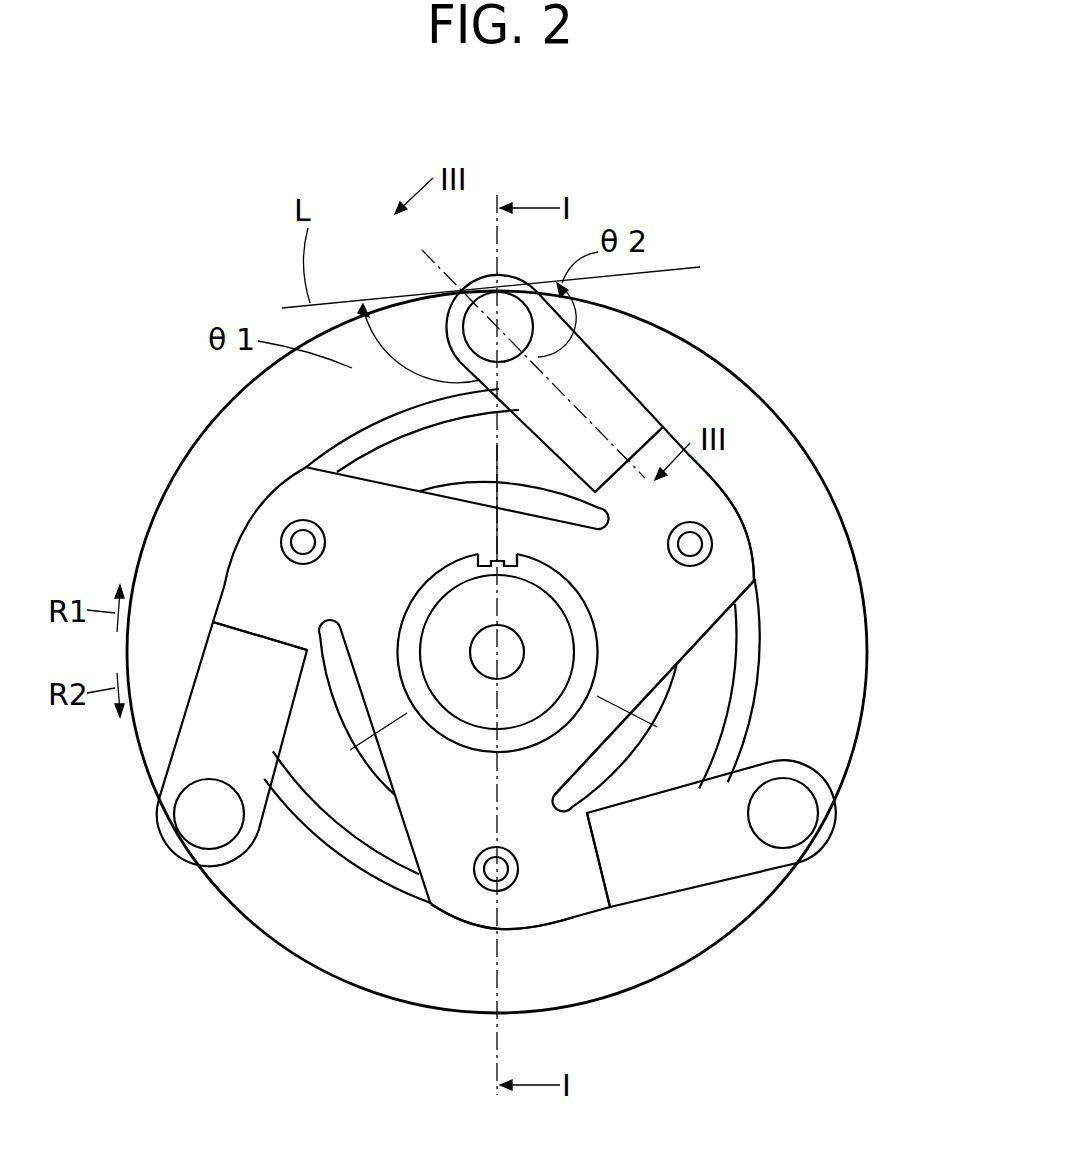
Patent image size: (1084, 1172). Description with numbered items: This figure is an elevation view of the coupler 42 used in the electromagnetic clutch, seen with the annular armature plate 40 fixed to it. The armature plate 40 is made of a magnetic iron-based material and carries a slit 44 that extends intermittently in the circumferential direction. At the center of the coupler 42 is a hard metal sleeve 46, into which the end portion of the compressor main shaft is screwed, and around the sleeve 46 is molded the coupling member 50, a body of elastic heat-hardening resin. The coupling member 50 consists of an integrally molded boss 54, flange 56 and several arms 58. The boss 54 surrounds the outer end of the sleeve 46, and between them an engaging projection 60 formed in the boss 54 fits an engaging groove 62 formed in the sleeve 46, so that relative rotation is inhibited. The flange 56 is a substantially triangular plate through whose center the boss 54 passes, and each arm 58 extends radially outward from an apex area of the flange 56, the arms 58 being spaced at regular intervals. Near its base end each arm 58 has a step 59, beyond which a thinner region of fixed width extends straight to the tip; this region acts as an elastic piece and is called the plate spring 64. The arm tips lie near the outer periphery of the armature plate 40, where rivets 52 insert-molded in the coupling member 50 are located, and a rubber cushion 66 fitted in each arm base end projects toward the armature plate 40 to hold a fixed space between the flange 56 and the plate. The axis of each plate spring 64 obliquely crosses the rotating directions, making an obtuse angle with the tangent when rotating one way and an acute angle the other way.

The armature plate 40 is at (832, 630).
The coupler 42 is at (762, 518).
The slit 44 is at (425, 890).
The sleeve 46 is at (468, 730).
The coupling member 50 is at (705, 652).
The rivets 52 is at (478, 325).
The boss 54 is at (360, 858).
The flange 56 is at (672, 607).
The arms 58 is at (707, 497).
The step 59 is at (650, 435).
The engaging projection 60 is at (480, 562).
The engaging groove 62 is at (514, 558).
The plate spring 64 is at (612, 385).
The rubber cushion 66 is at (296, 535).